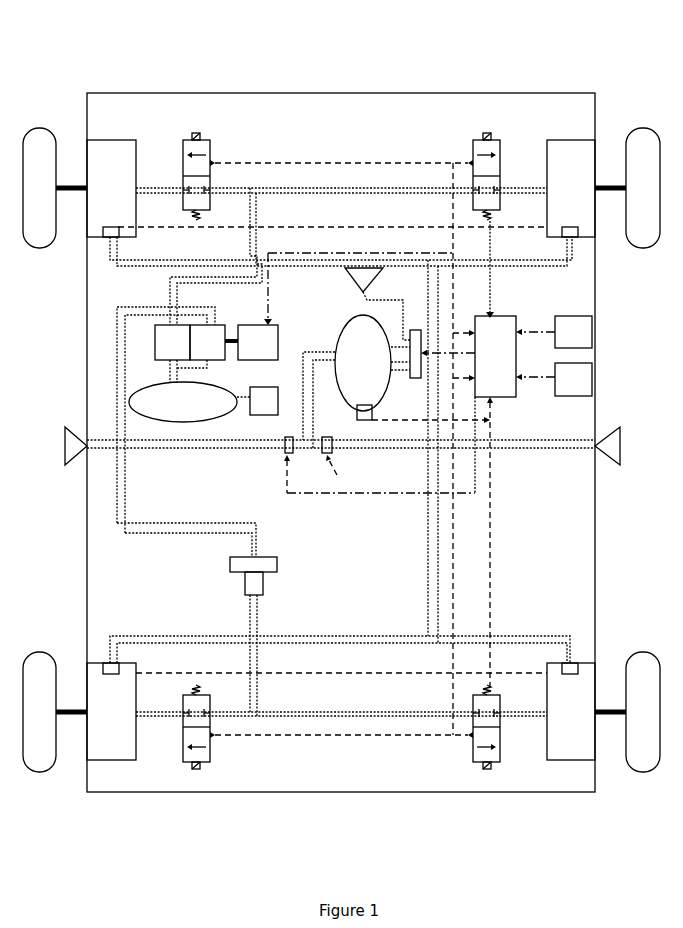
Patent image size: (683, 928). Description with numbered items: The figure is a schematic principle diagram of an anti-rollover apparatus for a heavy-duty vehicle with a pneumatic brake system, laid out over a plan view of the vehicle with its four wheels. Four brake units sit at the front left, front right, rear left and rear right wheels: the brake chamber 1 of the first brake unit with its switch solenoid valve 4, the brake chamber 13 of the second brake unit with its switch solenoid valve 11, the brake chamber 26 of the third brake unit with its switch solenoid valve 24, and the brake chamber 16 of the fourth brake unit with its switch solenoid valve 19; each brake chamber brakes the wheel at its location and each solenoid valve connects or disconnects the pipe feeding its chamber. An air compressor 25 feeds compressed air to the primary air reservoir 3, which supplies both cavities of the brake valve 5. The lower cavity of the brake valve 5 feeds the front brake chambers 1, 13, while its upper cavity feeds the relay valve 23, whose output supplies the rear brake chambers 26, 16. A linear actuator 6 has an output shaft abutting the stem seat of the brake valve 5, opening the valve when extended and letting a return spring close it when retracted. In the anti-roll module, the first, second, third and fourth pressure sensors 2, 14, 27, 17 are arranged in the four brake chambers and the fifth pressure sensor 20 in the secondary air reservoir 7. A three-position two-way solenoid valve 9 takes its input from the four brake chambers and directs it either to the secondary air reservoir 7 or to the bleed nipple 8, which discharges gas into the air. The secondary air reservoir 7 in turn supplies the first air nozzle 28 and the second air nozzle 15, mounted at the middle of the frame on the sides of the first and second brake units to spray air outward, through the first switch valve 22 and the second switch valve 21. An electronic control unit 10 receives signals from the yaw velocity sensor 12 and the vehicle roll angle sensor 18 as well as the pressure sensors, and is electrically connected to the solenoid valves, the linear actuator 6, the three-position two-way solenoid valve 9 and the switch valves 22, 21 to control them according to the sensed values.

The brake chamber of the first brake unit 1 is at (103, 139).
The first pressure sensor 2 is at (118, 229).
The primary air reservoir 3 is at (146, 384).
The switch solenoid valve of the first brake unit 4 is at (210, 140).
The brake valve 5 is at (225, 325).
The linear actuator 6 is at (280, 325).
The secondary air reservoir 7 is at (343, 318).
The bleed nipple 8 is at (382, 268).
The three-position two-way solenoid valve 9 is at (421, 330).
The electronic control unit (ECU) 10 is at (475, 316).
The switch solenoid valve of the second brake unit 11 is at (487, 134).
The yaw velocity sensor 12 is at (556, 316).
The brake chamber of the second brake unit 13 is at (547, 167).
The second pressure sensor 14 is at (577, 227).
The second air nozzle 15 is at (597, 427).
The brake chamber of the fourth brake unit 16 is at (578, 760).
The fourth pressure sensor 17 is at (562, 666).
The vehicle roll angle sensor 18 is at (578, 396).
The switch solenoid valve of the fourth brake unit 19 is at (474, 763).
The fifth pressure sensor 20 is at (358, 420).
The second switch valve 21 is at (327, 454).
The first switch valve 22 is at (293, 454).
The relay valve 23 is at (277, 573).
The switch solenoid valve of the third brake unit 24 is at (210, 696).
The air compressor 25 is at (248, 415).
The brake chamber of the third brake unit 26 is at (118, 760).
The third pressure sensor 27 is at (103, 674).
The first air nozzle 28 is at (72, 462).